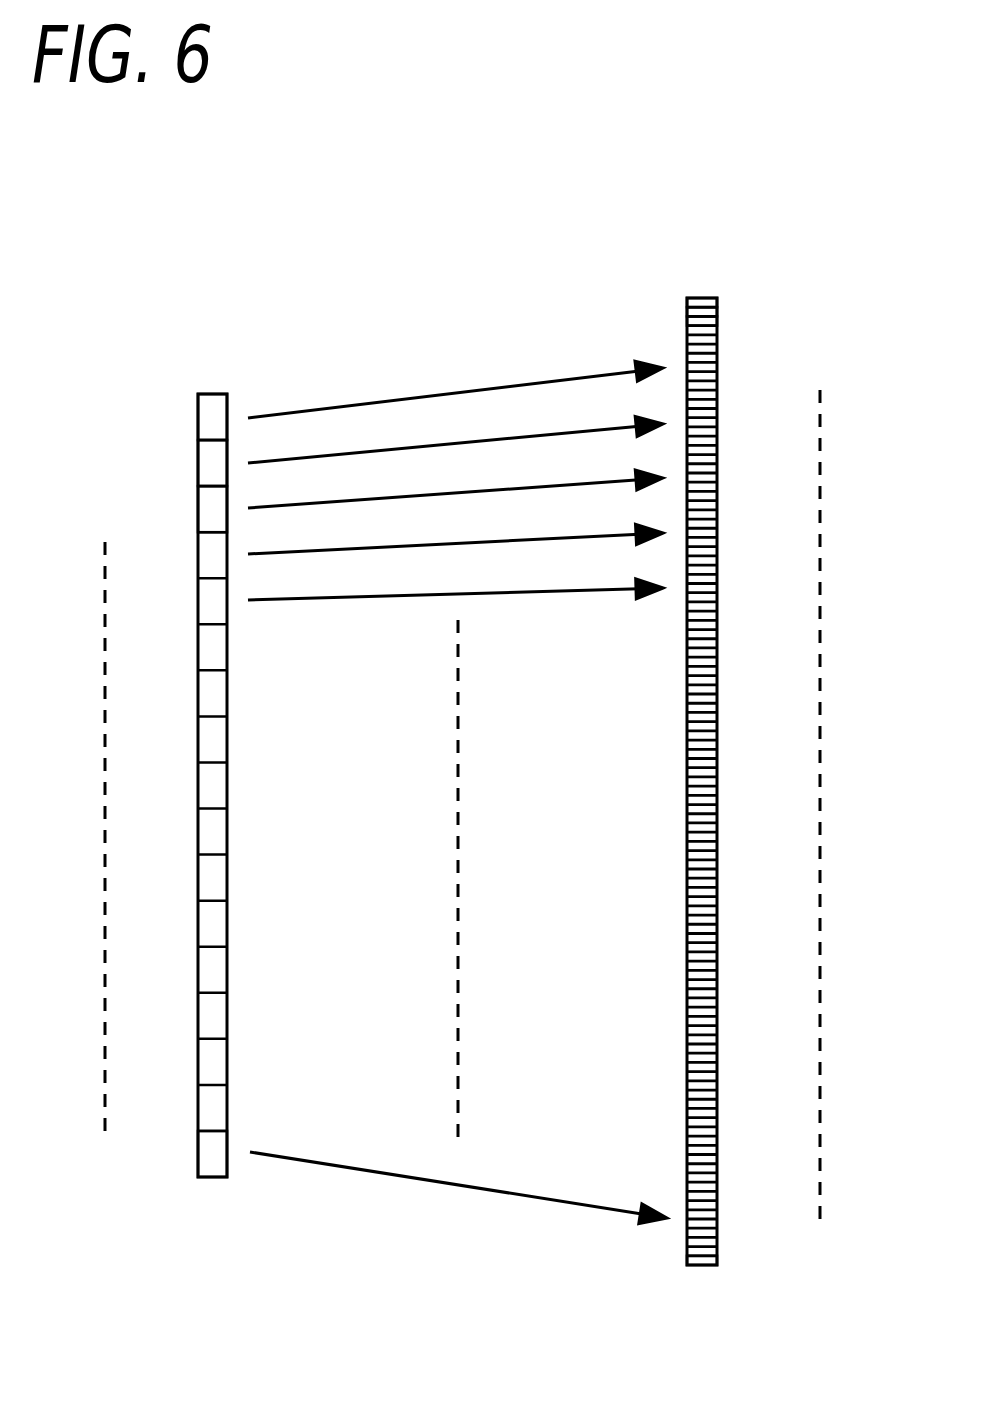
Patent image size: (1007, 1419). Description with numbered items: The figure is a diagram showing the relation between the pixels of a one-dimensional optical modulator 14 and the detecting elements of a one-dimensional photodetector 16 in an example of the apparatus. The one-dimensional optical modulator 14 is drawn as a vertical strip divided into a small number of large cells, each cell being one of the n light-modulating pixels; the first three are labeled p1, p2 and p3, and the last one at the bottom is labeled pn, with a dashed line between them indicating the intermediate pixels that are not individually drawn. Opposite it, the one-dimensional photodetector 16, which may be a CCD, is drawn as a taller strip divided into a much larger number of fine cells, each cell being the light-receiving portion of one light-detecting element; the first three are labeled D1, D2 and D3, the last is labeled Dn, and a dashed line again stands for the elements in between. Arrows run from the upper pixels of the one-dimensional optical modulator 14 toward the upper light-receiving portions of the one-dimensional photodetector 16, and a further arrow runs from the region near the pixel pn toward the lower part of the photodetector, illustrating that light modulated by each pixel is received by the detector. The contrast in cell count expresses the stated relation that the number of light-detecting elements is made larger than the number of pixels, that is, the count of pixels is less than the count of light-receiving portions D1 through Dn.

The one-dimensional optical modulator 14 is at (150, 829).
The one-dimensional photodetector 16 is at (758, 803).
The light-modulating pixel p1 is at (197, 413).
The light-modulating pixel p2 is at (197, 462).
The light-modulating pixel p3 is at (197, 508).
The light-modulating pixel pn is at (200, 1150).
The light-receiving portion D1 is at (717, 300).
The light-receiving portion D2 is at (717, 312).
The light-receiving portion D3 is at (717, 325).
The light-receiving portion Dn is at (720, 1263).